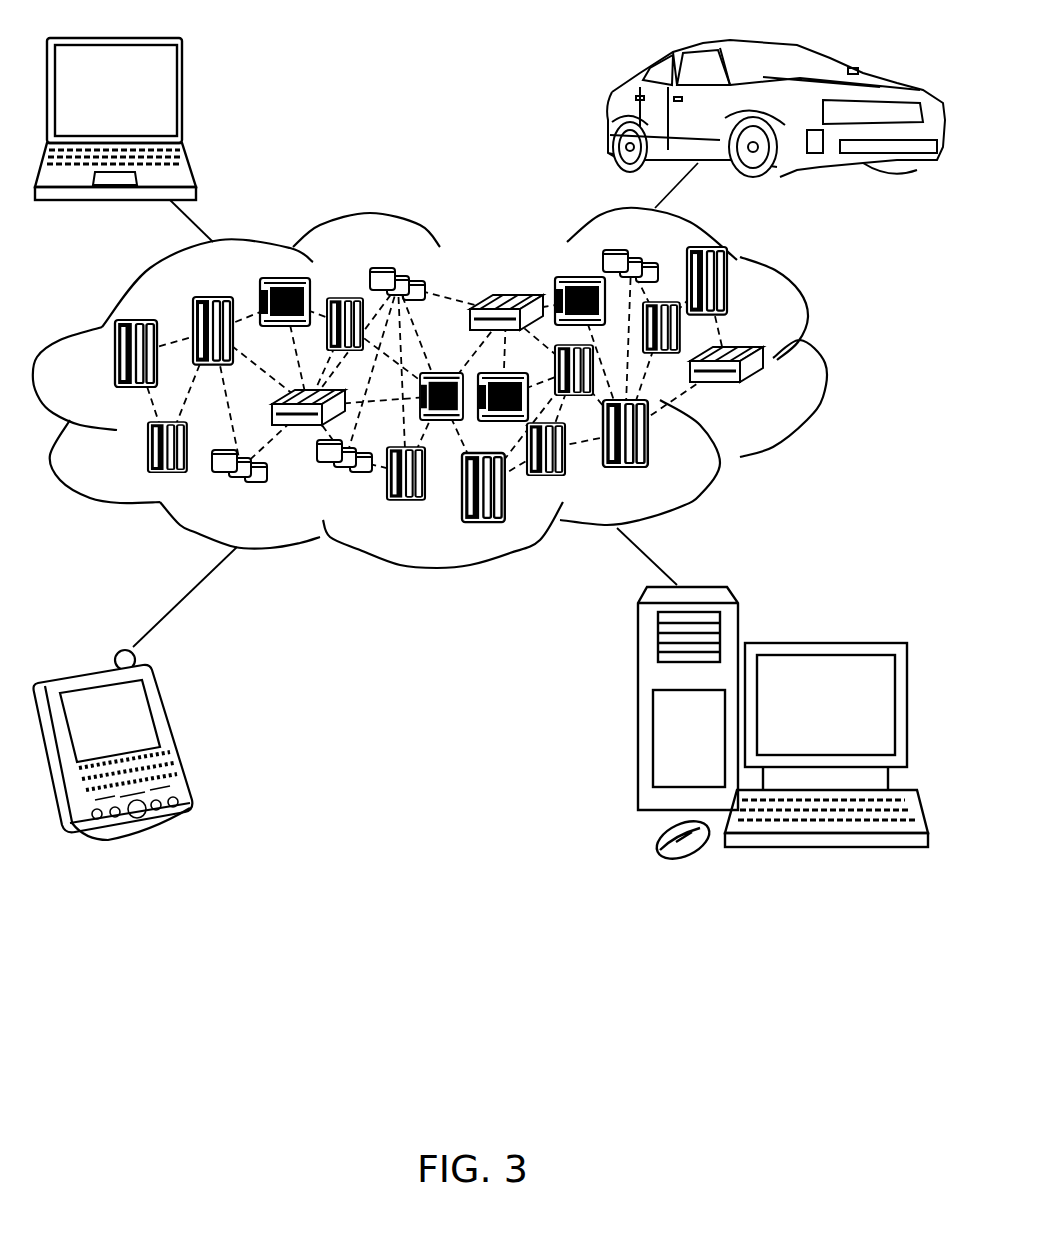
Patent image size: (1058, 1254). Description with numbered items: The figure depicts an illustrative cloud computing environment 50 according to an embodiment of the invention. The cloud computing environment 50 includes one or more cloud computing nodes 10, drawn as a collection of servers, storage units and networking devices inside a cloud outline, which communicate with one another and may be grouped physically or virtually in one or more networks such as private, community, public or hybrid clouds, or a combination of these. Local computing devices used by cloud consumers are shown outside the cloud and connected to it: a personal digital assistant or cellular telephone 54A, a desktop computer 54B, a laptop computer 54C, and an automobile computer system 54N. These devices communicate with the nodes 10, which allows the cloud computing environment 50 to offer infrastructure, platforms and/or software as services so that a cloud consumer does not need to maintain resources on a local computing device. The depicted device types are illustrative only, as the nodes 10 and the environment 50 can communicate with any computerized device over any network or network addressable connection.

The cloud computing node 10 is at (778, 398).
The cloud computing environment 50 is at (825, 363).
The personal digital assistant or cellular telephone 54A is at (173, 733).
The desktop computer 54B is at (823, 642).
The laptop computer 54C is at (183, 99).
The automobile computer system 54N is at (610, 110).